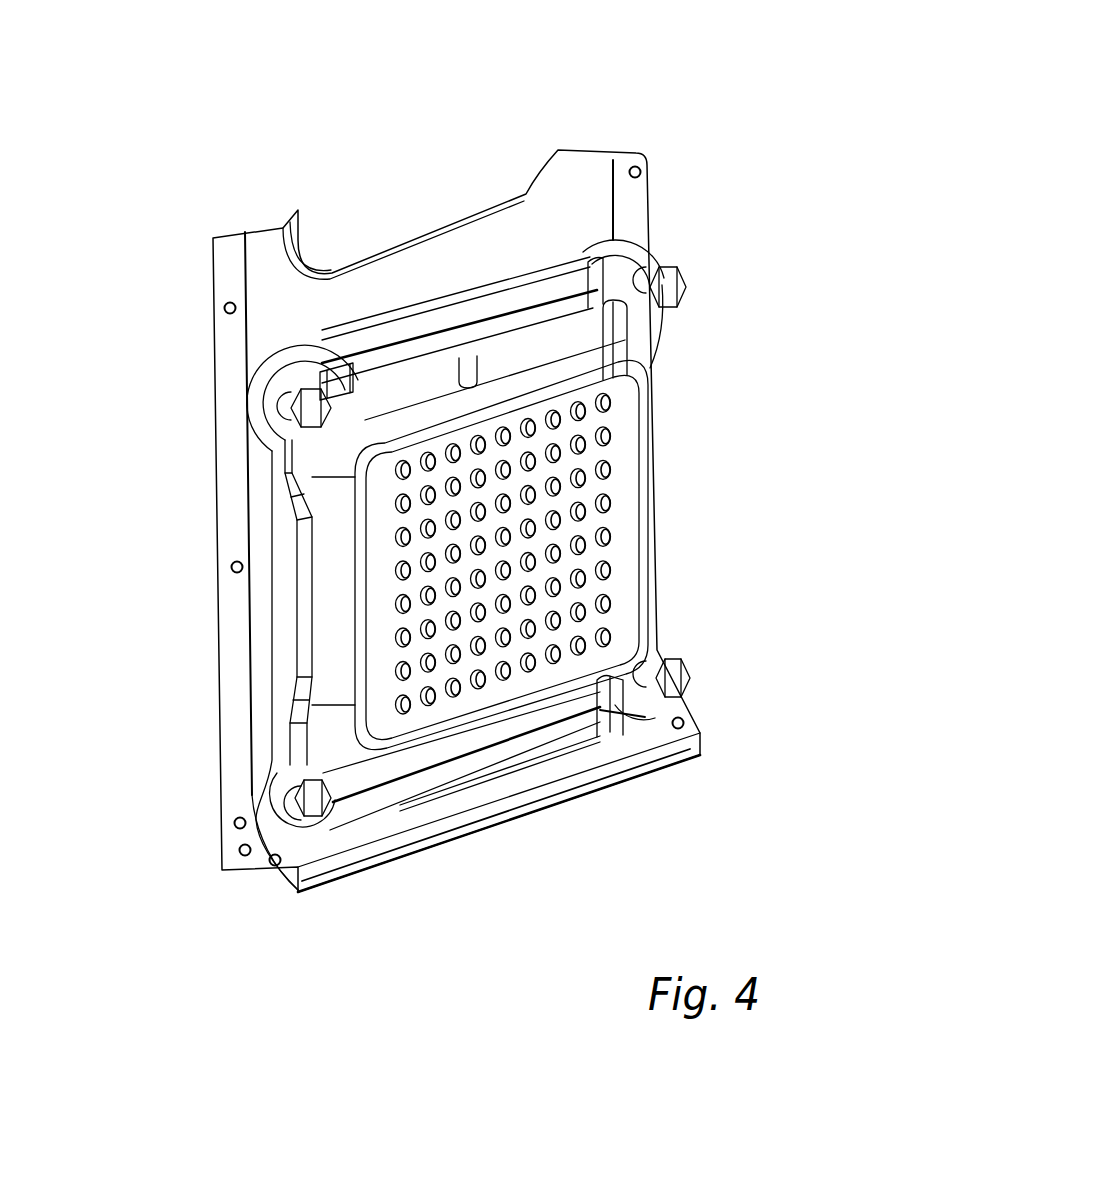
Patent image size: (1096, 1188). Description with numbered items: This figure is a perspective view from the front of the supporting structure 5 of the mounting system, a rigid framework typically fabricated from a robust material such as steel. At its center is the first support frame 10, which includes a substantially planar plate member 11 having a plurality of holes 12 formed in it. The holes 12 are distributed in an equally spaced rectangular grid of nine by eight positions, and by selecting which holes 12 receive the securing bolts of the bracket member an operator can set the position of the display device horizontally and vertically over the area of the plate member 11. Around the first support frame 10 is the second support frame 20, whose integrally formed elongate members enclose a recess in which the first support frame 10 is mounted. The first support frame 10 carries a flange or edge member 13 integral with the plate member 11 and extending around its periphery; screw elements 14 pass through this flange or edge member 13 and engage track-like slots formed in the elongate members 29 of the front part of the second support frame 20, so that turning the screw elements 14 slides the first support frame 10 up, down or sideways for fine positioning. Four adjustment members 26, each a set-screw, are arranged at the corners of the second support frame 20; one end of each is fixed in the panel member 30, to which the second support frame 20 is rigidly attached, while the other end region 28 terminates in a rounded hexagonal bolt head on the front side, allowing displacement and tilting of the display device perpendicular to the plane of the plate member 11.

The supporting structure 5 is at (673, 510).
The first support frame 10 is at (497, 592).
The plate member 11 is at (363, 615).
The holes 12 is at (605, 465).
The flange or edge member 13 is at (327, 561).
The screw elements 14 is at (282, 230).
The second support frame 20 is at (425, 295).
The adjustment members 26 is at (658, 268).
The end region 28 is at (680, 290).
The elongate members 29 is at (447, 374).
The panel member 30 is at (570, 187).